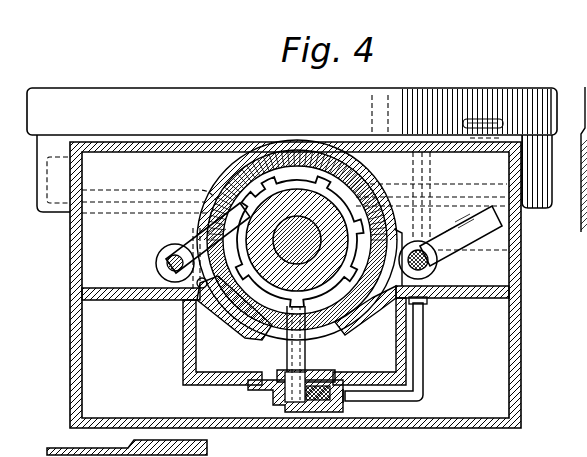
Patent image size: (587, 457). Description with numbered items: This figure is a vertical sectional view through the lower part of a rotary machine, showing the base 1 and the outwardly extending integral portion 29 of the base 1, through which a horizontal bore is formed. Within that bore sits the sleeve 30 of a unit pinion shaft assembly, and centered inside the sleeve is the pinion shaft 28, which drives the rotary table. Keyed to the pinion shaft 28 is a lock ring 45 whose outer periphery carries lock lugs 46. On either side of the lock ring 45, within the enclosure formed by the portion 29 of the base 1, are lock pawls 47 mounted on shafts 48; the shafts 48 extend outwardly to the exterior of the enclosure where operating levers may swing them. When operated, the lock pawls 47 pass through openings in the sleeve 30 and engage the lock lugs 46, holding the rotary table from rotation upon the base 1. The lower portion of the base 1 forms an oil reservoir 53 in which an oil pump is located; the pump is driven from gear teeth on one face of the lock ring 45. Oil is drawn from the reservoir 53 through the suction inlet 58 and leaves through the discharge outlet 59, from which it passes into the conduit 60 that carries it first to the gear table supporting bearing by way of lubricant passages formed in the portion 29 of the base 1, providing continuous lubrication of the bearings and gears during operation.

The base 1 is at (483, 416).
The pinion shaft 28 is at (337, 212).
The outwardly extending integral portion 29 is at (518, 230).
The sleeve 30 is at (357, 327).
The lock ring 45 is at (323, 273).
The lock lugs 46 is at (250, 320).
The lock pawls 47 is at (188, 239).
The shafts 48 is at (158, 268).
The oil reservoir 53 is at (233, 363).
The suction inlet 58 is at (284, 372).
The discharge outlet 59 is at (325, 395).
The conduit 60 is at (383, 397).